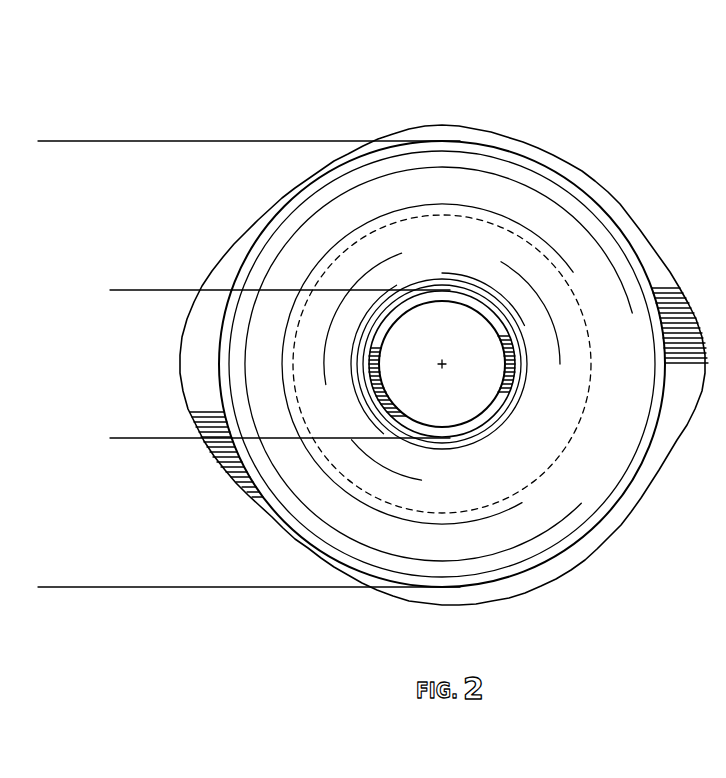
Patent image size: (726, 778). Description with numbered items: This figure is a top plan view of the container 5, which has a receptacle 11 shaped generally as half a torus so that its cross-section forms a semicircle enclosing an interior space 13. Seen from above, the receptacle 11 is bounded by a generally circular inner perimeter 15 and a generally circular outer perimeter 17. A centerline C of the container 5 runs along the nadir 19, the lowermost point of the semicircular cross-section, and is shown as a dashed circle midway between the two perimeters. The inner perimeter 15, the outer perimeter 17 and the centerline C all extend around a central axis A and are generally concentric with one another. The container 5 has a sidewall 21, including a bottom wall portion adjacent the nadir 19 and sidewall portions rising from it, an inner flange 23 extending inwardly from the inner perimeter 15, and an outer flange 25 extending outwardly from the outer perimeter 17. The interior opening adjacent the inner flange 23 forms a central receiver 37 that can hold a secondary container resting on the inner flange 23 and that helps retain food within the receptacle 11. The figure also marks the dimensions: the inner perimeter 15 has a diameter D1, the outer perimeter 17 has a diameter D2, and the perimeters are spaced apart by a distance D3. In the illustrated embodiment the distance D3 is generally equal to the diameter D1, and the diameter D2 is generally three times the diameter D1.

The container 5 is at (305, 105).
The receptacle 11 is at (478, 158).
The interior space 13 is at (528, 199).
The inner perimeter 15 is at (367, 382).
The outer perimeter 17 is at (278, 212).
The nadir 19 is at (556, 458).
The sidewall 21 is at (632, 387).
The inner flange 23 is at (500, 320).
The outer flange 25 is at (638, 232).
The central receiver 37 is at (519, 389).
The central axis A is at (444, 366).
The centerline C is at (363, 490).
The diameter of the inner perimeter D1 is at (118, 290).
The diameter of the outer perimeter D2 is at (45, 141).
The distance between the perimeters D3 is at (118, 141).